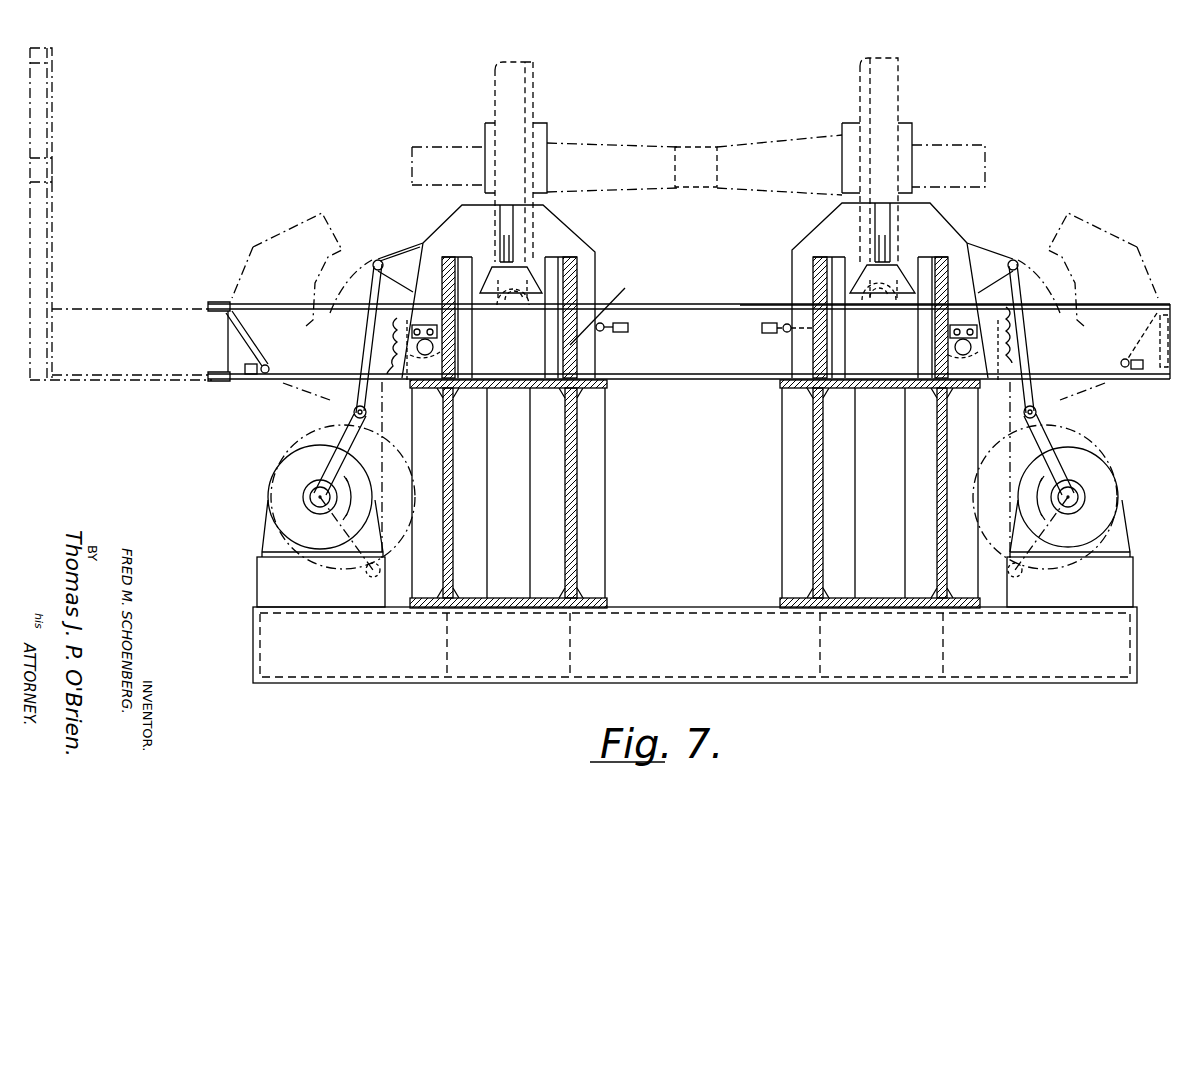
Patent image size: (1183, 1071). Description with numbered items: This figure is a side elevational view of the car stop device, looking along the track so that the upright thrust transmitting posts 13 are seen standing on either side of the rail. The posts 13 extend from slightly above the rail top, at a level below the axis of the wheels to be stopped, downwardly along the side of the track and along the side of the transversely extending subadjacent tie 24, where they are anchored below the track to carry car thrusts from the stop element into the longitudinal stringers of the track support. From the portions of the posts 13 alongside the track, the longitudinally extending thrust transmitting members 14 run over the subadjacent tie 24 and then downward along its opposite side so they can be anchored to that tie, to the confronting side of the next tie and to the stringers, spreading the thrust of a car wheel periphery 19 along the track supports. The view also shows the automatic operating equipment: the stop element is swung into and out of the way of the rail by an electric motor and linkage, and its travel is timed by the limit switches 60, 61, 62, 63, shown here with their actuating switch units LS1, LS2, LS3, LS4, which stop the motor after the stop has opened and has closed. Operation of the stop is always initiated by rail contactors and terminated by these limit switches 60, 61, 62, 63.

The upright thrust transmitting posts 13 is at (810, 290).
The longitudinally extending thrust transmitting members 14 is at (440, 355).
The car wheel periphery 19 is at (560, 207).
The subadjacent tie 24 is at (688, 304).
The limit switch 60 is at (275, 352).
The limit switch 61 is at (629, 325).
The limit switch 62 is at (764, 323).
The limit switch 63 is at (1135, 358).
The limit switch LS1 is at (609, 335).
The limit switch LS2 is at (774, 335).
The limit switch LS3 is at (253, 379).
The limit switch LS4 is at (1132, 374).